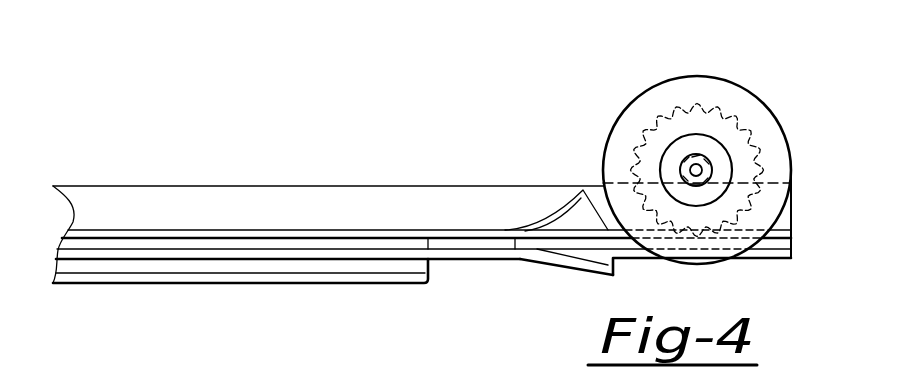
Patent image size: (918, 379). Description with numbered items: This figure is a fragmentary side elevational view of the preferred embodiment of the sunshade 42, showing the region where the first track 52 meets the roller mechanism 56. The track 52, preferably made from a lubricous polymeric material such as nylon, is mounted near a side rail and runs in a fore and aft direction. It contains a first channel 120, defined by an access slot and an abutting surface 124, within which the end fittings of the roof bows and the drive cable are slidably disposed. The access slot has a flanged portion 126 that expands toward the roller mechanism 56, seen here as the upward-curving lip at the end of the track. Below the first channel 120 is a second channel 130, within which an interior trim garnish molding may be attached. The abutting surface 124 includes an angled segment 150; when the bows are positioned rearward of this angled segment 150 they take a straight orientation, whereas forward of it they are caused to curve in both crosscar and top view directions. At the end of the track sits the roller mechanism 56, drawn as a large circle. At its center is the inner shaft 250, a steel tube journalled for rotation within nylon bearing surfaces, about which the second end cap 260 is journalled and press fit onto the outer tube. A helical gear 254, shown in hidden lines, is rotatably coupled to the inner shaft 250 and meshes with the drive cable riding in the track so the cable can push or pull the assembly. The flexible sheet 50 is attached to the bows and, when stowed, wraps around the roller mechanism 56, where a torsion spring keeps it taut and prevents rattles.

The sunshade 42 is at (487, 7).
The flexible sheet 50 is at (698, 258).
The first track 52 is at (350, 208).
The roller mechanism 56 is at (742, 78).
The first channel 120 is at (205, 242).
The abutting surface 124 is at (399, 245).
The flanged portion 126 is at (551, 198).
The second channel 130 is at (348, 270).
The angled segment 150 is at (470, 247).
The inner shaft 250 is at (707, 170).
The helical gear 254 is at (657, 107).
The second end cap 260 is at (715, 152).